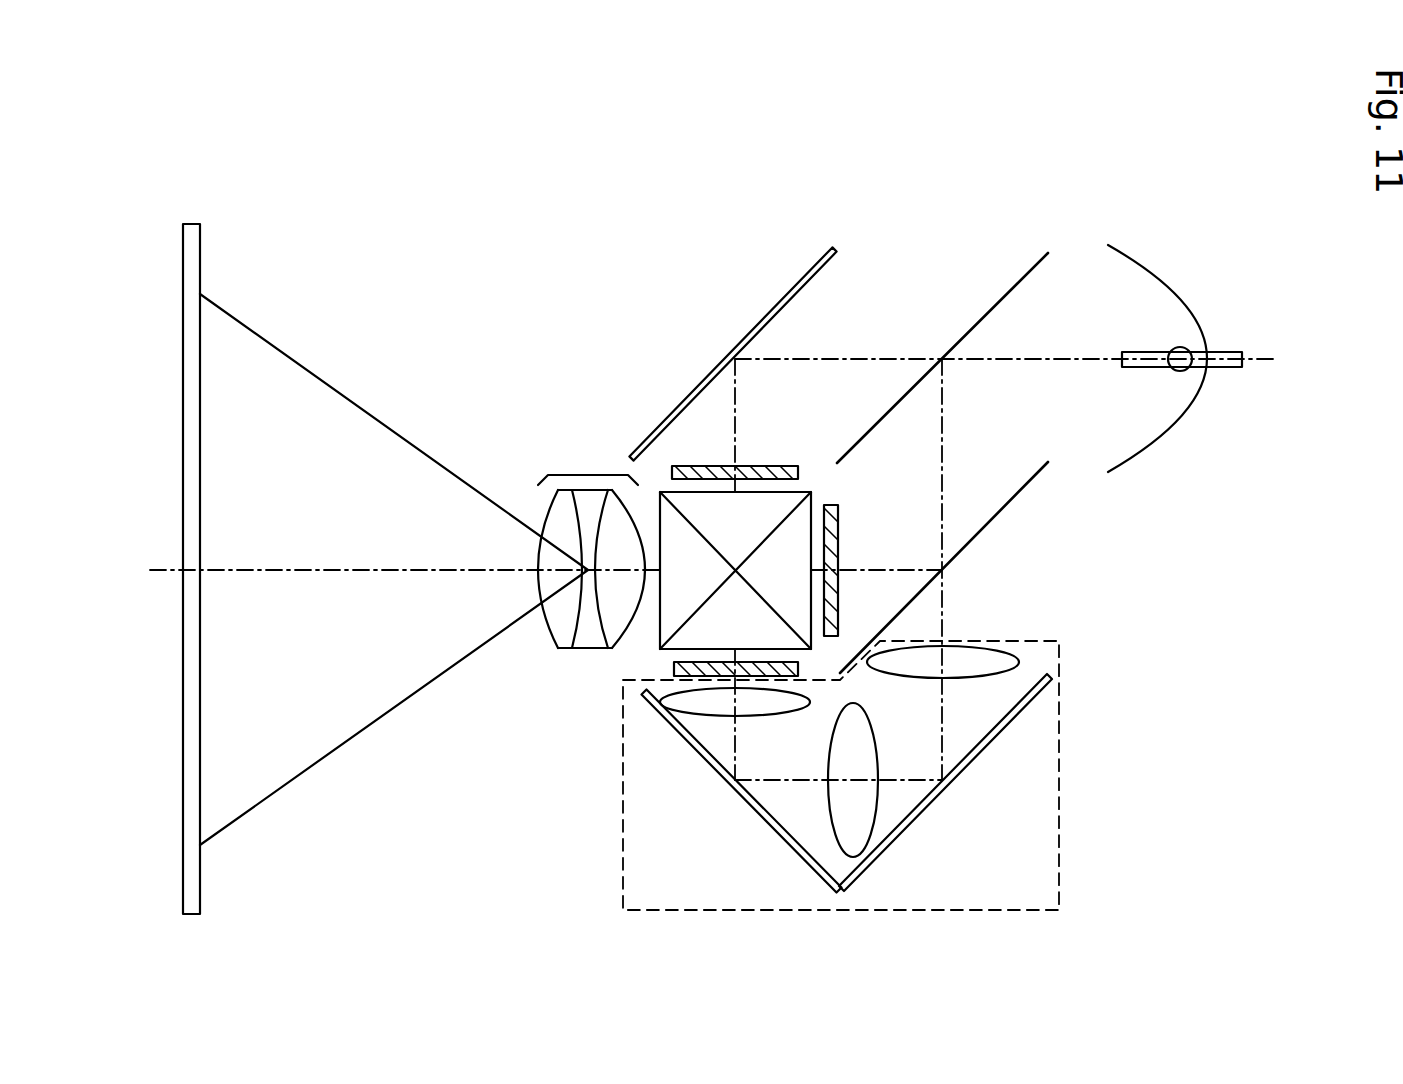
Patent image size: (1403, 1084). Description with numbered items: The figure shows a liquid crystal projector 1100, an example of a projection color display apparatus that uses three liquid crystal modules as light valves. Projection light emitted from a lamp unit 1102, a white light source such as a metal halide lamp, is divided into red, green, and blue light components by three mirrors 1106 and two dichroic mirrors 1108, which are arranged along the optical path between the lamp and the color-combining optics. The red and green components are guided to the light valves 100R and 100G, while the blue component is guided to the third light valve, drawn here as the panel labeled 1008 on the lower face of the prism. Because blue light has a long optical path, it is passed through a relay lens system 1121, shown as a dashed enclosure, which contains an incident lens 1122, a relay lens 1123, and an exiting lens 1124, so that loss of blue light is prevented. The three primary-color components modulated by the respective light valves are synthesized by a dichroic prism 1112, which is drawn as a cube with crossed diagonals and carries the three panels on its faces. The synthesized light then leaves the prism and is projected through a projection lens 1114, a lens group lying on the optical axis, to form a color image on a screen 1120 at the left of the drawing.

The liquid crystal projector 1100 is at (1115, 180).
The lamp unit 1102 is at (1190, 415).
The mirror 1106 is at (775, 310).
The dichroic mirror 1108 is at (1001, 298).
The light valve 100R is at (700, 466).
The light valve 100G is at (828, 505).
The blue liquid crystal light valve 1008 is at (674, 670).
The dichroic prism 1112 is at (662, 646).
The projection lens 1114 is at (590, 475).
The screen 1120 is at (200, 813).
The relay lens system 1121 is at (1062, 852).
The incident lens 1122 is at (990, 662).
The relay lens 1123 is at (853, 813).
The exiting lens 1124 is at (700, 708).